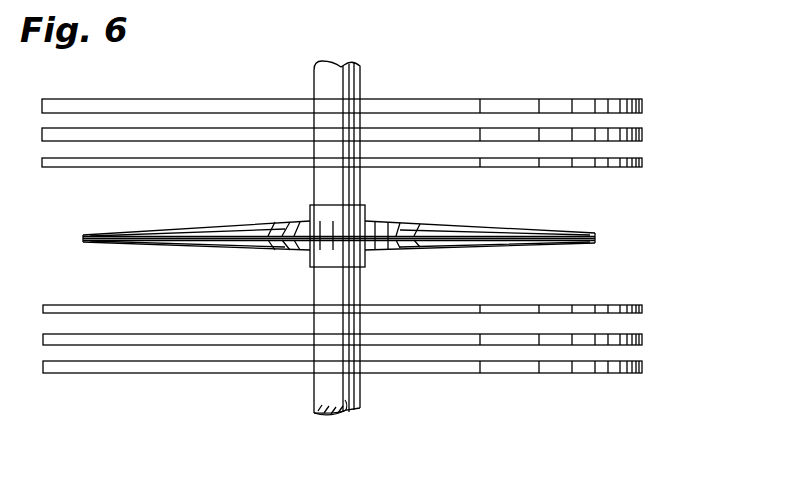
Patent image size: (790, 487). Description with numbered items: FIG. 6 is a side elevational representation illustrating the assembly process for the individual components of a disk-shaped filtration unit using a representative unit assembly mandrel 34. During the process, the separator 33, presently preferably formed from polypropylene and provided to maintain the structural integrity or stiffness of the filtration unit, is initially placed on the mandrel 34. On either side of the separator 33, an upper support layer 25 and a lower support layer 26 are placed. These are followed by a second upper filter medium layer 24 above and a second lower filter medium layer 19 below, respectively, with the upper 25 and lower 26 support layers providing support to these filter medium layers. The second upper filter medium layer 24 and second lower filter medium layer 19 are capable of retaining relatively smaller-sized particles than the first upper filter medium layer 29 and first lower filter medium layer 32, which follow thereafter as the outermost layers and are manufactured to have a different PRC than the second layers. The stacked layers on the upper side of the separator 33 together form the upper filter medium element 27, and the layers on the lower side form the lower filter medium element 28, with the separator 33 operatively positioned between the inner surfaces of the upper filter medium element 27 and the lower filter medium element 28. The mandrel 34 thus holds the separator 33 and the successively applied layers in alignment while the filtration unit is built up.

The second lower filter medium layer 19 is at (588, 345).
The second upper filter medium layer 24 is at (565, 130).
The upper support layer 25 is at (507, 158).
The lower support layer 26 is at (528, 313).
The upper filter medium element 27 is at (384, 105).
The lower filter medium element 28 is at (384, 360).
The first upper filter medium layer 29 is at (613, 100).
The first lower filter medium layer 32 is at (637, 373).
The separator element 33 is at (584, 250).
The unit assembly mandrel 34 is at (327, 385).